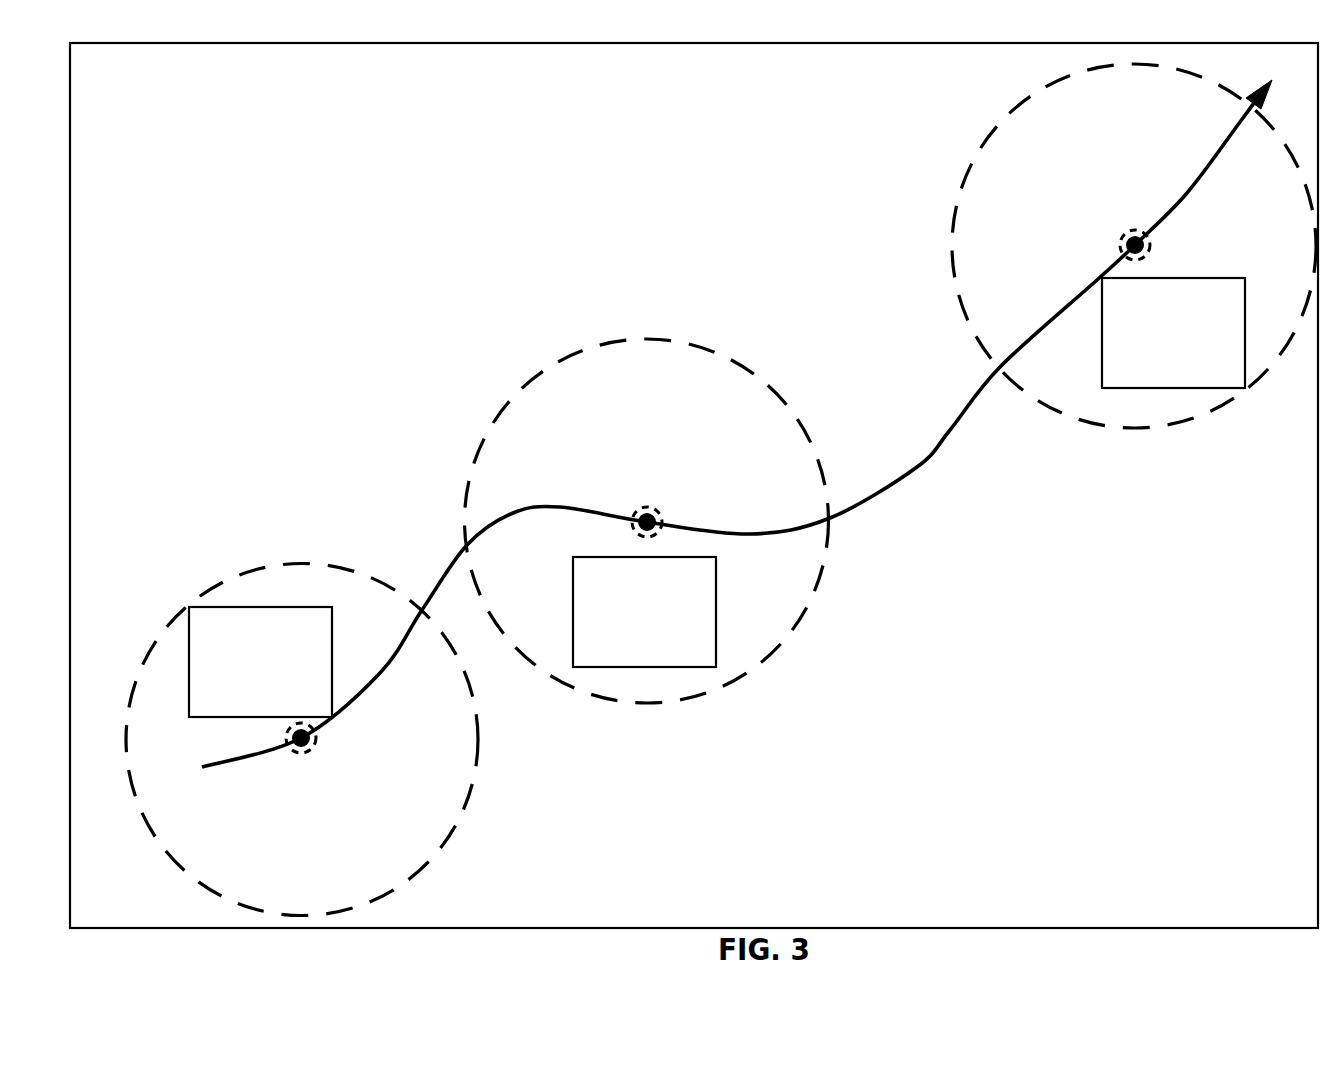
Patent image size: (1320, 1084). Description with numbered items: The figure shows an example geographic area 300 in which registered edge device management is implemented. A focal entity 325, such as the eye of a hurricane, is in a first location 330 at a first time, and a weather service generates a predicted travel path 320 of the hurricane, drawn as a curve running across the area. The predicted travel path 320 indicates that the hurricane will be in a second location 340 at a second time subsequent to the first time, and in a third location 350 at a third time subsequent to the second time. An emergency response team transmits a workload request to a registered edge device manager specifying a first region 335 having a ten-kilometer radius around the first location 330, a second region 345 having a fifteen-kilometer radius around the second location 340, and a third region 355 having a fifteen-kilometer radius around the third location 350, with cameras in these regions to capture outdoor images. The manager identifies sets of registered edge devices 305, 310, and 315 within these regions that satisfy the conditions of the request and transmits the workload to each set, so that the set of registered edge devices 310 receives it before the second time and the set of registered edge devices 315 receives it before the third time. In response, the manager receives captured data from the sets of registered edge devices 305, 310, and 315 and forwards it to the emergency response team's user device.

The geographic area 300 is at (720, 104).
The set of registered edge devices 305 is at (243, 711).
The set of registered edge devices 310 is at (627, 661).
The set of registered edge devices 315 is at (1156, 382).
The predicted travel path 320 is at (918, 468).
The focal entity 325 is at (300, 753).
The first location 330 is at (318, 745).
The first region 335 is at (237, 577).
The second location 340 is at (660, 510).
The second region 345 is at (688, 340).
The third location 350 is at (1153, 243).
The third region 355 is at (985, 140).